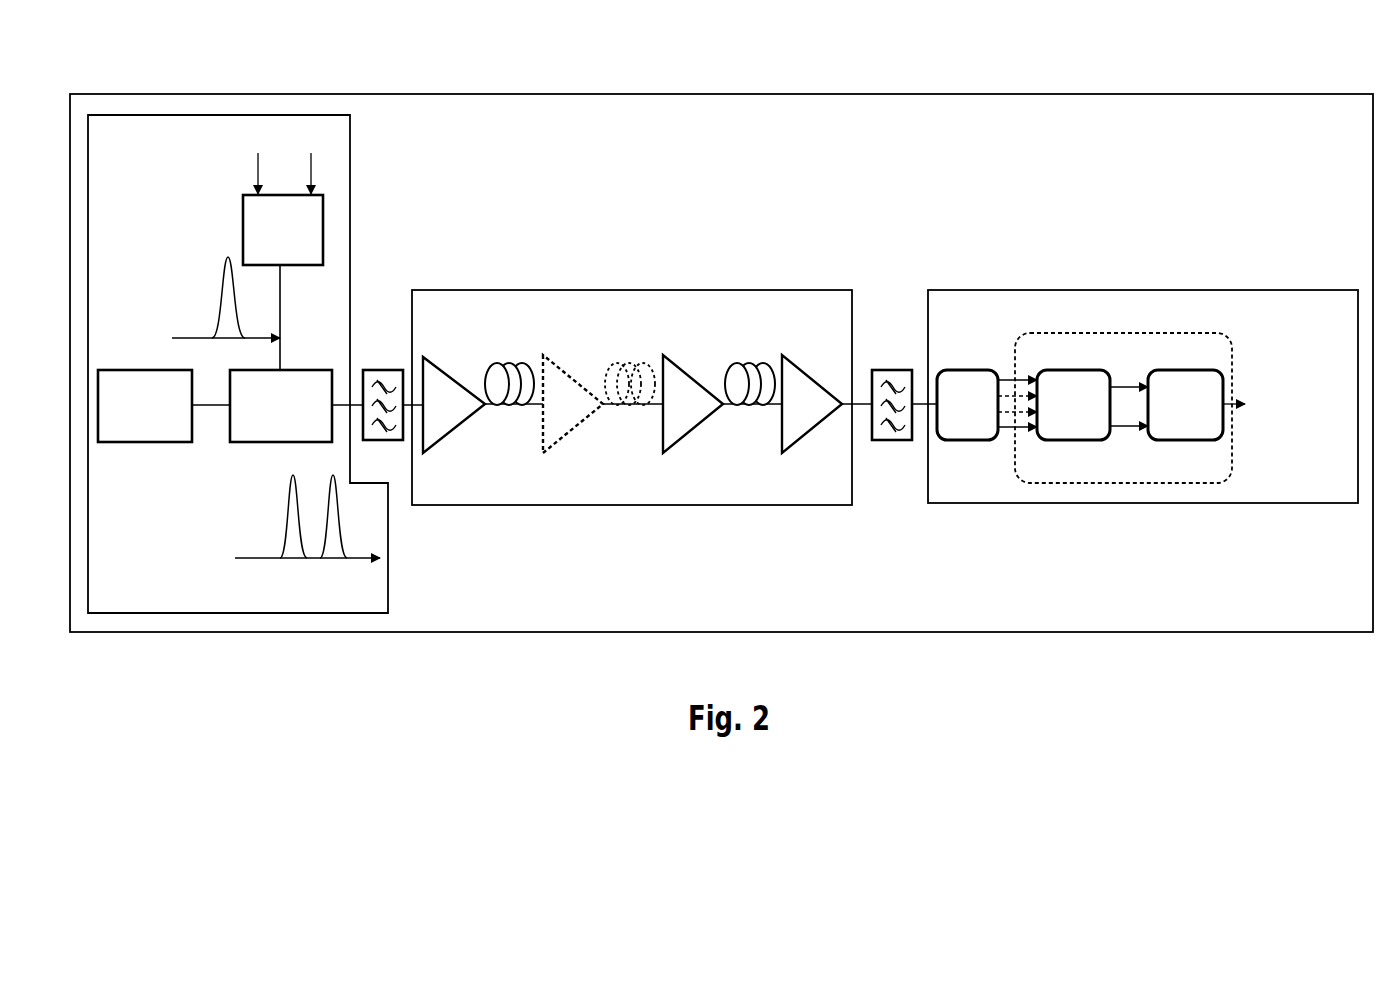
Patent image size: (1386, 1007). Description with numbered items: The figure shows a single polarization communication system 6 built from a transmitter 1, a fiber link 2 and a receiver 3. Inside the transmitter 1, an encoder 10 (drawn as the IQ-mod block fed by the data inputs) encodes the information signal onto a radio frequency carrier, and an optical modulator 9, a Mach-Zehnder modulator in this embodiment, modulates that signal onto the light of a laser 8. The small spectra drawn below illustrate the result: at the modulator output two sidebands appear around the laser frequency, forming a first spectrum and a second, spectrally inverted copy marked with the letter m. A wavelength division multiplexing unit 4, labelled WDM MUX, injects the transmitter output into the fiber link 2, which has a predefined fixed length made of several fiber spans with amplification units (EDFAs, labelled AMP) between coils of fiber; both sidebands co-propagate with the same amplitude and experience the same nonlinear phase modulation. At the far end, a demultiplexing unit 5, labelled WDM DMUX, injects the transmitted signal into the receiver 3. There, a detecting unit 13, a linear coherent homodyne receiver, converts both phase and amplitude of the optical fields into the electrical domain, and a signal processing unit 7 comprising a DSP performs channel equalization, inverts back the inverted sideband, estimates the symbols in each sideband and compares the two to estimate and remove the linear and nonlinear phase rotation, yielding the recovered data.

The transmitter 1 is at (338, 173).
The fiber link 2 is at (758, 300).
The receiver 3 is at (1270, 300).
The wavelength division multiplexing unit 4 is at (380, 442).
The demultiplexing unit 5 is at (907, 438).
The communication system 6 is at (1245, 113).
The signal processing unit 7 is at (1043, 480).
The laser 8 is at (157, 428).
The optical modulator 9 is at (257, 428).
The encoder 10 is at (245, 206).
The detecting unit 13 is at (958, 388).